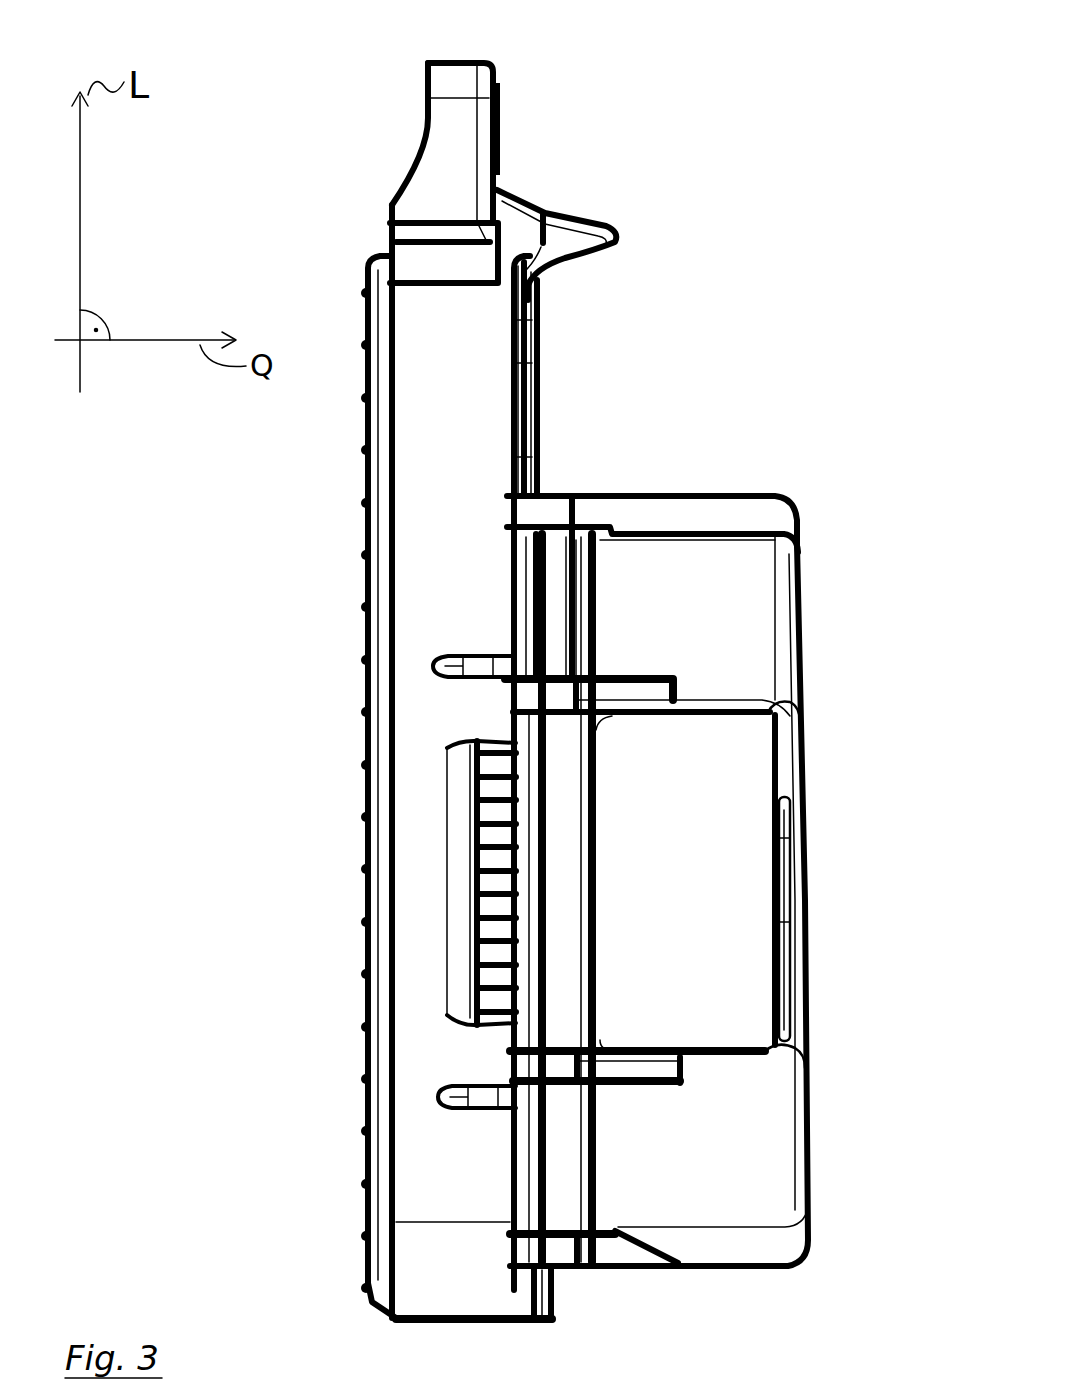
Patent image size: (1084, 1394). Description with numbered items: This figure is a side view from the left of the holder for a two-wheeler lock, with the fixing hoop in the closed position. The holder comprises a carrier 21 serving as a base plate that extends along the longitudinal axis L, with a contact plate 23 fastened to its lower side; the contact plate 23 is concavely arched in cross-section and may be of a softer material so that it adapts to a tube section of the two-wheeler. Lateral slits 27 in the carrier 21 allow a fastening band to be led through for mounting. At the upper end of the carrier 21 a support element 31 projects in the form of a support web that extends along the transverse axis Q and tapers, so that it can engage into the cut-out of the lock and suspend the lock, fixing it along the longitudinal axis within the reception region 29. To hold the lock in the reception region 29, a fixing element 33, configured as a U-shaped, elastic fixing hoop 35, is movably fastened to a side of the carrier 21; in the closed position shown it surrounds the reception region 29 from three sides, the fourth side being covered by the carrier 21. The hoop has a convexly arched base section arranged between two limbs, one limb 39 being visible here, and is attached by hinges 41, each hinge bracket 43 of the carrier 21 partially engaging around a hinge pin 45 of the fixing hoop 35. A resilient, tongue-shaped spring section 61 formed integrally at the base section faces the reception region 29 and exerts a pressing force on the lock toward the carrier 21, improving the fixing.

The carrier 21 is at (456, 80).
The contact plate 23 is at (386, 262).
The lateral slits 27 is at (462, 950).
The reception region 29 is at (661, 947).
The support element 31 is at (570, 236).
The fixing element 33 is at (690, 856).
The fixing hoop 35 is at (812, 472).
The limb 39 is at (735, 598).
The hinge 41 is at (560, 472).
The hinge bracket 43 is at (580, 583).
The hinge pin 45 is at (552, 570).
The spring section 61 is at (768, 849).